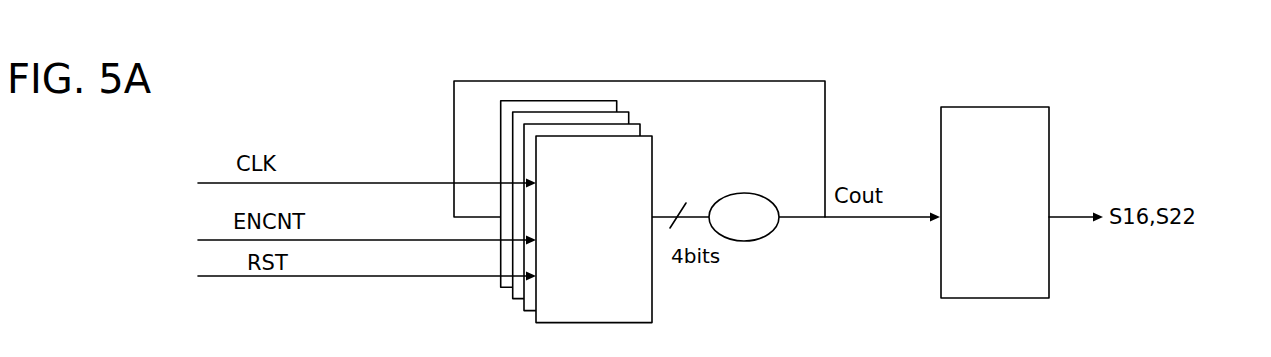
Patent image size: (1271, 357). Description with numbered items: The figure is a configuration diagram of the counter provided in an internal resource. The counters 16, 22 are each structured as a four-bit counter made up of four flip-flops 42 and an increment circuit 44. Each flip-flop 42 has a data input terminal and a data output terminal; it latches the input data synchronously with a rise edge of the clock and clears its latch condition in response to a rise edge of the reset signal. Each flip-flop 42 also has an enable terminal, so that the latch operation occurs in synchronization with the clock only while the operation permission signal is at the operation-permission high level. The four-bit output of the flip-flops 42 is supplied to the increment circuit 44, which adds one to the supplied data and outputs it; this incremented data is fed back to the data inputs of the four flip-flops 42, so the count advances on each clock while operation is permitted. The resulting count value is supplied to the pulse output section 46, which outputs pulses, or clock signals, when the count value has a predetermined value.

The counter 16 is at (639, 129).
The counter 22 is at (578, 76).
The flip-flop 42 is at (672, 155).
The increment circuit 44 is at (756, 193).
The pulse output section 46 is at (995, 190).